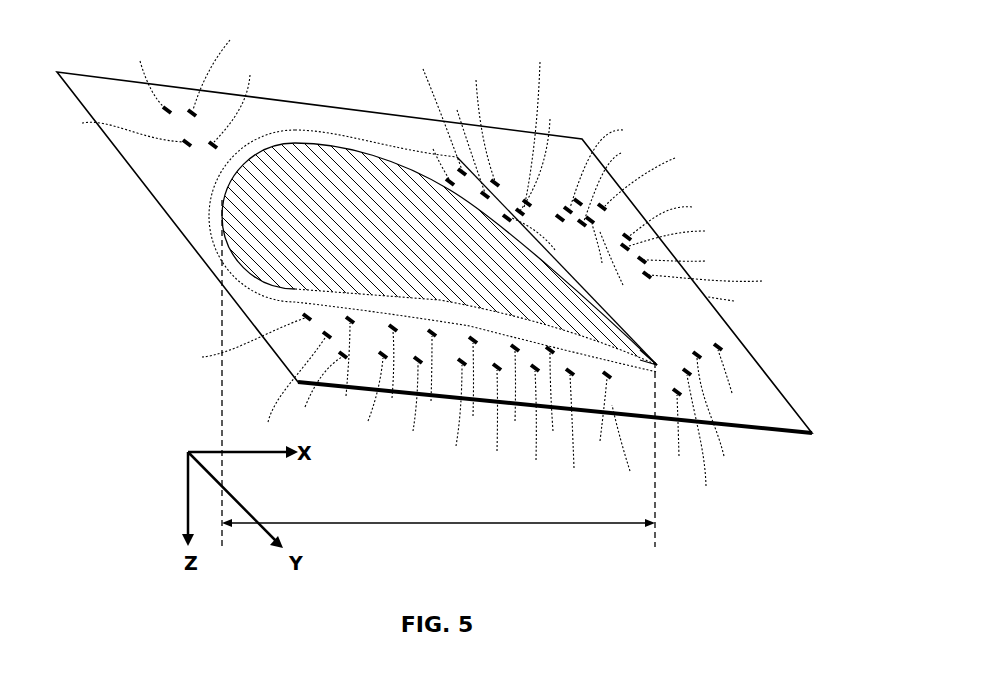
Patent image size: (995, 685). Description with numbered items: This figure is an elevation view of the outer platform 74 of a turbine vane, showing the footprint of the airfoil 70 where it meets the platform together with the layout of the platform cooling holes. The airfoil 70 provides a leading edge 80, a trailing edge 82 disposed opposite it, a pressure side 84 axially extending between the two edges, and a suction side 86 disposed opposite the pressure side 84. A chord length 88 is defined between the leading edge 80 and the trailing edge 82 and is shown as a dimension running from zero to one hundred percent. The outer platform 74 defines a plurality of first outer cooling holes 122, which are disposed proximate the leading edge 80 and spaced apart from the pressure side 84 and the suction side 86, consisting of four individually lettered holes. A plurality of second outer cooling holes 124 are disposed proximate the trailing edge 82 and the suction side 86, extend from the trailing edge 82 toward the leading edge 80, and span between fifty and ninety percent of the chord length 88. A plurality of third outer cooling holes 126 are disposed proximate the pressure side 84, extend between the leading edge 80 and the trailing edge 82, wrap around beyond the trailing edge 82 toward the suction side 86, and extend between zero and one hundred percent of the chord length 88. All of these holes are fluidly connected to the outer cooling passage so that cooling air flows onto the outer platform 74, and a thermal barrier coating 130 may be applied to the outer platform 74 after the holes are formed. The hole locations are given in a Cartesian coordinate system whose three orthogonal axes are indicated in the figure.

The airfoil 70 is at (339, 120).
The outer platform 74 is at (672, 186).
The leading edge 80 is at (210, 220).
The trailing edge 82 is at (659, 365).
The pressure side 84 is at (406, 250).
The suction side 86 is at (370, 150).
The chord length 88 is at (450, 524).
The plurality of first outer cooling holes 122 is at (178, 88).
The plurality of second outer cooling holes 124 is at (560, 150).
The plurality of third outer cooling holes 126 is at (295, 351).
The thermal barrier coating 130 is at (496, 180).